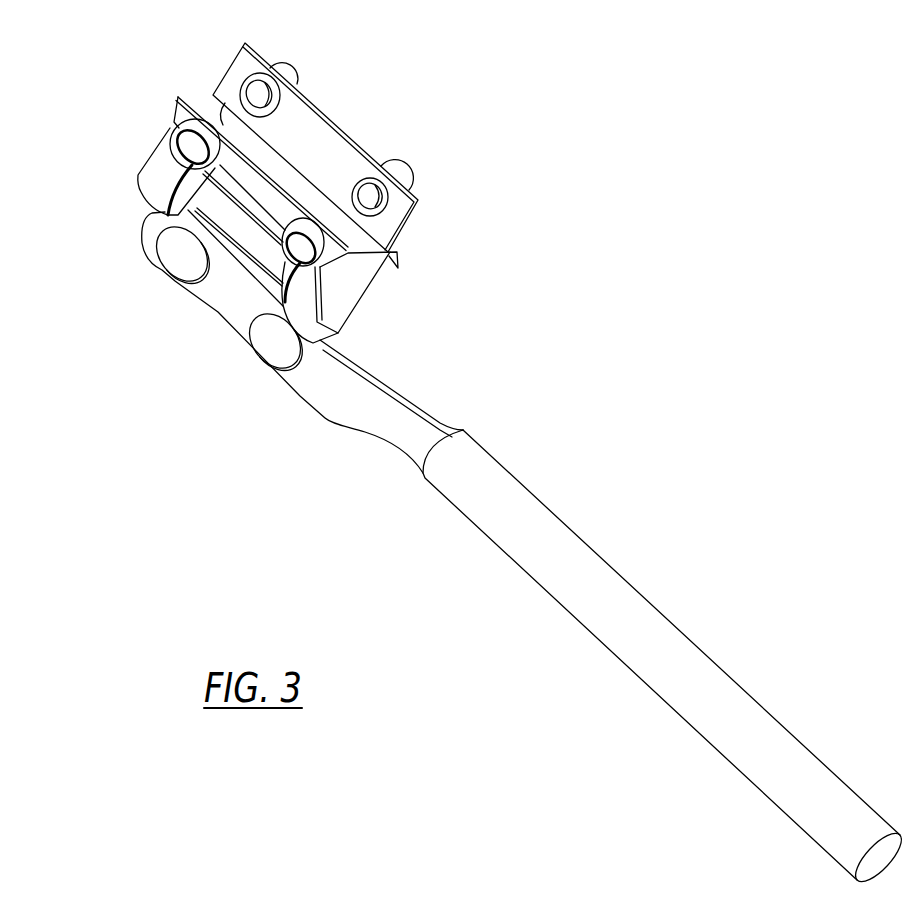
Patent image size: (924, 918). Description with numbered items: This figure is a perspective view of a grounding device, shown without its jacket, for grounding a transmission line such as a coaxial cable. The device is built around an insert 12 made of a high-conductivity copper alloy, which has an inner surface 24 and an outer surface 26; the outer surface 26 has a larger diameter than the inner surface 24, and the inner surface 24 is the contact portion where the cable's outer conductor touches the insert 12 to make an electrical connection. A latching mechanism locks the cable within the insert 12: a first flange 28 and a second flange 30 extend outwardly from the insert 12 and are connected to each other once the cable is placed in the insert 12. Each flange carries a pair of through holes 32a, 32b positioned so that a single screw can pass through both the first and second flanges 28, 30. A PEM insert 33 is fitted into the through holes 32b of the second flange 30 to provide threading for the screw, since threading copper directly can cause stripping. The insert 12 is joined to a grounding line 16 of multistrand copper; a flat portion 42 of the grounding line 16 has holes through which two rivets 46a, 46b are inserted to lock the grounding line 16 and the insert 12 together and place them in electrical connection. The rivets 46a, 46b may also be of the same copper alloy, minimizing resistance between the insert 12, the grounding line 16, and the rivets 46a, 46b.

The insert 12 is at (460, 72).
The grounding line 16 is at (577, 606).
The inner surface 24 is at (257, 242).
The outer surface 26 is at (150, 168).
The first flange 28 is at (180, 96).
The second flange 30 is at (337, 147).
The through holes 32a is at (178, 96).
The through holes 32b is at (264, 87).
The PEM insert 33 is at (297, 71).
The flat portion 42 is at (223, 307).
The rivet 46a is at (272, 345).
The rivet 46b is at (175, 263).